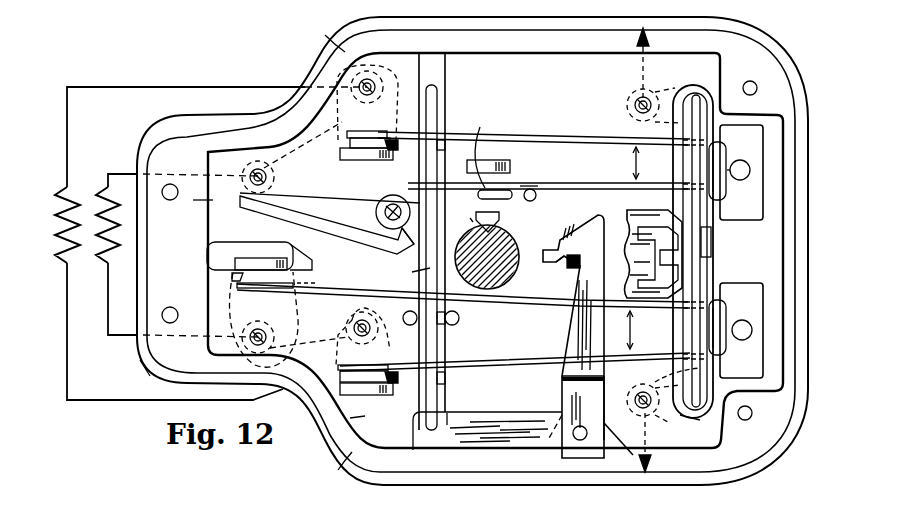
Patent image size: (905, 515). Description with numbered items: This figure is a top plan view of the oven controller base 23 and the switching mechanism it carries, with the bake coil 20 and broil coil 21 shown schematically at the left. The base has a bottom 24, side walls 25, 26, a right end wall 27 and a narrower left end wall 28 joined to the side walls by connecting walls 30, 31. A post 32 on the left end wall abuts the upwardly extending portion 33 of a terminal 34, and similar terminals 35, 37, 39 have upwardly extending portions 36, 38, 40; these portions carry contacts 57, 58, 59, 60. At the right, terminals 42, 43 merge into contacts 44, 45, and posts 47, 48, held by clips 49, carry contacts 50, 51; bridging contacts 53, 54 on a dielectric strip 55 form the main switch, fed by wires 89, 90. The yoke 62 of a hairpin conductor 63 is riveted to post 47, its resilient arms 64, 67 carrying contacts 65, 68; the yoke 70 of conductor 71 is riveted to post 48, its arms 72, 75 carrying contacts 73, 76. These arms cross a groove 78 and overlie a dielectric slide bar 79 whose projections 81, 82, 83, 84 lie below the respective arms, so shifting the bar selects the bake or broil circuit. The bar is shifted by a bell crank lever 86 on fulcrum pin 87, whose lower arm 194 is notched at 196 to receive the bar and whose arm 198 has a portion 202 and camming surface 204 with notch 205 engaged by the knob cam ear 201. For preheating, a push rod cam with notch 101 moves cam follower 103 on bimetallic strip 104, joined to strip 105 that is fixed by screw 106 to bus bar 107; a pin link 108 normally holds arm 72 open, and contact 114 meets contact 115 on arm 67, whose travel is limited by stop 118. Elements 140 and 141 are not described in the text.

The bake coil 20 is at (70, 198).
The broil coil 21 is at (110, 212).
The base 23 is at (134, 362).
The bottom 24 is at (488, 60).
The side wall 25 is at (331, 33).
The side wall 26 is at (332, 469).
The right end wall 27 is at (790, 204).
The left end wall 28 is at (215, 201).
The connecting wall 30 is at (300, 138).
The connecting wall 31 is at (363, 418).
The post 32 is at (248, 246).
The upwardly extending portion 33 is at (300, 250).
The terminal 34 is at (311, 284).
The terminal 35 is at (384, 90).
The upwardly extending portion 36 is at (393, 154).
The terminal 37 is at (378, 345).
The upwardly extending portion 38 is at (393, 389).
The terminal 39 is at (286, 156).
The upwardly extending portion 40 is at (510, 166).
The terminal 42 is at (660, 95).
The terminal 43 is at (660, 418).
The contact 44 is at (697, 90).
The contact 45 is at (705, 418).
The post 47 is at (742, 165).
The post 48 is at (725, 335).
The clip 49 is at (758, 220).
The contact 50 is at (715, 203).
The contact 51 is at (712, 298).
The bridging contact 53 is at (712, 135).
The bridging contact 54 is at (672, 374).
The strip of dielectric material 55 is at (711, 240).
The contact 57 is at (234, 280).
The contact 58 is at (352, 134).
The contact 59 is at (340, 385).
The contact 60 is at (512, 192).
The yoke 62 is at (733, 180).
The hairpin-shaped conductor 63 is at (648, 163).
The resilient arm 64 is at (578, 136).
The contact 65 is at (390, 134).
The resilient arm 67 is at (592, 184).
The contact 68 is at (475, 140).
The yoke 70 is at (735, 322).
The hairpin-shaped conductor 71 is at (642, 330).
The resilient arm 72 is at (487, 304).
The contact 73 is at (260, 287).
The resilient arm 75 is at (503, 358).
The contact 76 is at (350, 372).
The groove 78 is at (440, 120).
The slide bar 79 is at (438, 100).
The projection 81 is at (440, 146).
The projection 82 is at (405, 200).
The projection 83 is at (436, 319).
The projection 84 is at (437, 379).
The bell crank lever 86 is at (516, 409).
The fulcrum pin 87 is at (597, 417).
The wire 89 is at (640, 72).
The wire 90 is at (640, 450).
The notch 101 is at (500, 225).
The cam follower 103 is at (468, 223).
The bimetallic strip 104 is at (298, 200).
The bimetallic strip 105 is at (335, 226).
The screw 106 is at (385, 216).
The bus bar 107 is at (398, 242).
The pin type link 108 is at (411, 267).
The contact 114 is at (500, 208).
The contact 115 is at (536, 195).
The stop 118 is at (544, 186).
The bimetal element 140 is at (652, 228).
The heater 141 is at (637, 243).
The lower arm 194 is at (488, 420).
The notch 196 is at (455, 420).
The arm 198 is at (575, 318).
The ear 201 is at (572, 268).
The inwardly extending portion 202 is at (562, 260).
The camming surface 204 is at (590, 228).
The notch 205 is at (546, 244).